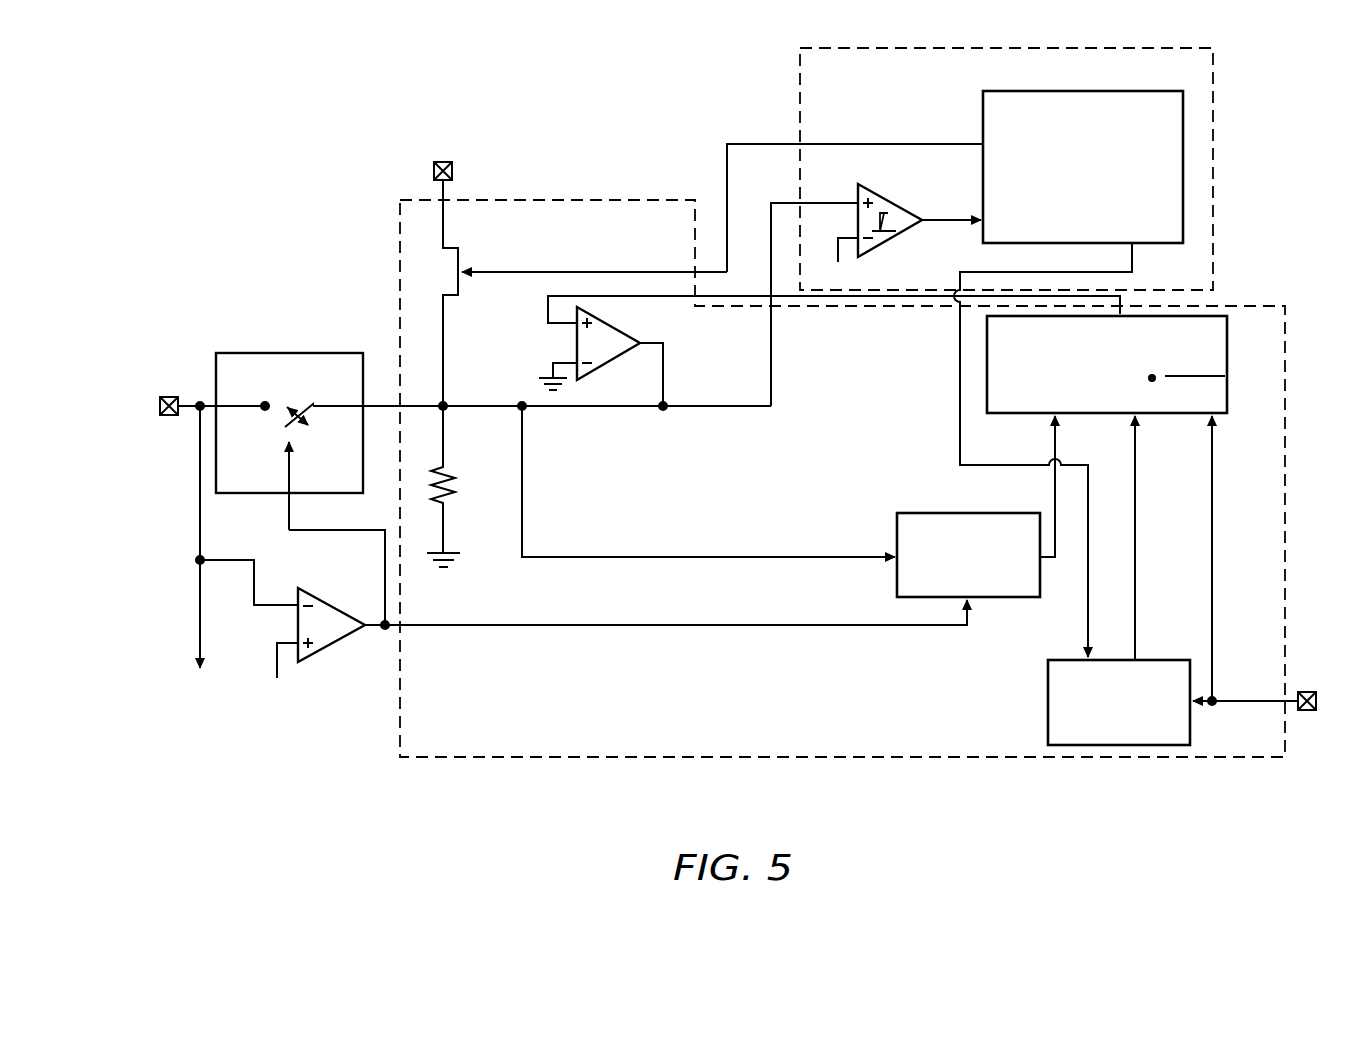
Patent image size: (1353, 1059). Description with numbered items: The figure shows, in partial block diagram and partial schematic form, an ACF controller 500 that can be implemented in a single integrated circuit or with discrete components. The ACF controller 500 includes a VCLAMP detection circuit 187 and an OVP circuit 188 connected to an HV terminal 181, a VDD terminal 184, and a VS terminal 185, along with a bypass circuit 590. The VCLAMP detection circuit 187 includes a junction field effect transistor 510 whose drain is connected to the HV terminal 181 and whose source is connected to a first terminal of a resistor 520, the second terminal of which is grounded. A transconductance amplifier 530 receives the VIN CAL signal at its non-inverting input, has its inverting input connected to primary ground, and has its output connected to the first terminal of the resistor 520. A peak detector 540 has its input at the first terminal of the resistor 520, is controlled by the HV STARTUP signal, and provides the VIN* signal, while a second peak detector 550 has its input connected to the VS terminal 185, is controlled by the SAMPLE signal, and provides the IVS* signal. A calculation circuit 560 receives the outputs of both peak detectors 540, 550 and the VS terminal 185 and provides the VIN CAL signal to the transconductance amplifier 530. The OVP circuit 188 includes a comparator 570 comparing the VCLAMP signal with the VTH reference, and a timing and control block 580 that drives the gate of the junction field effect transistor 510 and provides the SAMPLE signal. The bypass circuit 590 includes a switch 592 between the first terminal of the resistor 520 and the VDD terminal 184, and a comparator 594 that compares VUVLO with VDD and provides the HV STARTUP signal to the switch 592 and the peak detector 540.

The ACF controller 500 is at (233, 116).
The HV terminal 181 is at (432, 163).
The VDD terminal 184 is at (167, 396).
The VS terminal 185 is at (1311, 712).
The VCLAMP detection circuit 187 is at (645, 199).
The OVP circuit 188 is at (798, 110).
The junction field effect transistor 510 is at (461, 256).
The resistor 520 is at (455, 477).
The transconductance amplifier 530 is at (615, 326).
The peak detector 540 is at (895, 540).
The peak detector 550 is at (1045, 712).
The calculation circuit 560 is at (1230, 367).
The comparator 570 is at (885, 192).
The timing and control block 580 is at (982, 108).
The bypass circuit 590 is at (275, 306).
The switch 592 is at (292, 352).
The comparator 594 is at (327, 606).